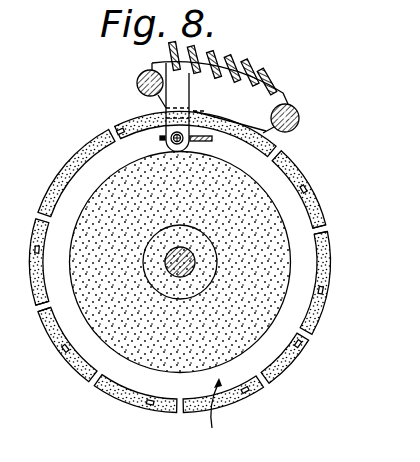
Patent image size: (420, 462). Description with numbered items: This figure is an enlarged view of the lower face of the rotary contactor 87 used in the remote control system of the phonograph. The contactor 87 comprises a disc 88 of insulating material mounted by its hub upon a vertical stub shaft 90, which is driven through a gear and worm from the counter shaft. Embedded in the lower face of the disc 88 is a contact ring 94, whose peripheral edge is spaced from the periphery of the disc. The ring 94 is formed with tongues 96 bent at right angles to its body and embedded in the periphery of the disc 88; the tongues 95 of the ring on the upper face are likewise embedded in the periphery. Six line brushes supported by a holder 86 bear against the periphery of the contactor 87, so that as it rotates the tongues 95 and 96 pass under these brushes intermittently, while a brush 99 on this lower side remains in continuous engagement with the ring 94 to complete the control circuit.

The holder 86 is at (288, 102).
The rotary contactor 87 is at (72, 145).
The disc 88 is at (127, 350).
The vertical stub shaft 90 is at (192, 268).
The contact ring 94 is at (229, 410).
The tongues 95 is at (306, 188).
The tongues 96 is at (321, 232).
The brush 99 is at (170, 140).